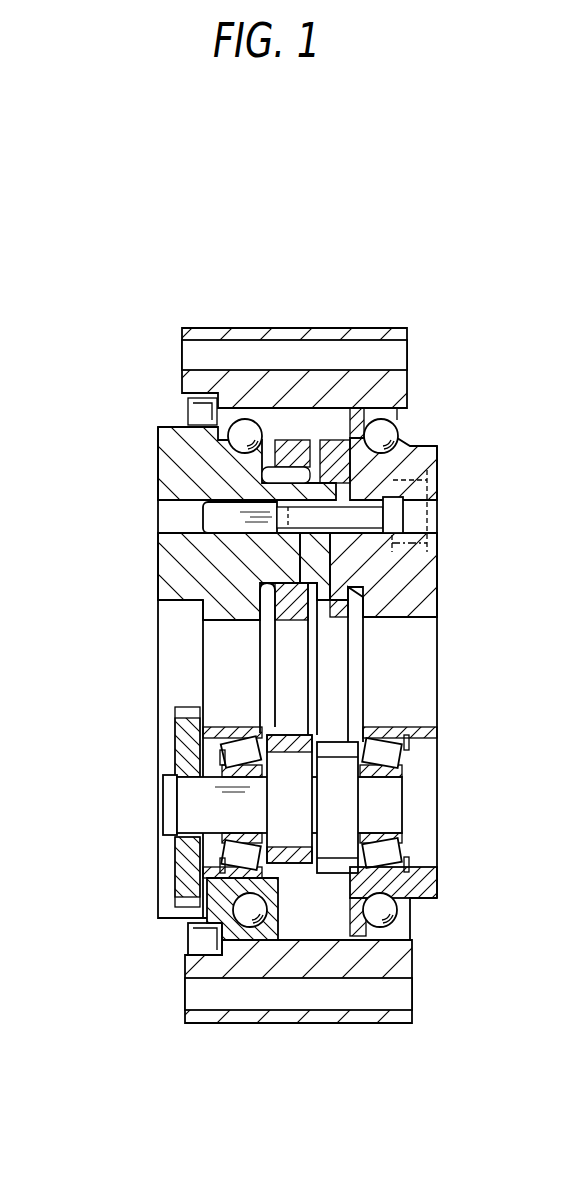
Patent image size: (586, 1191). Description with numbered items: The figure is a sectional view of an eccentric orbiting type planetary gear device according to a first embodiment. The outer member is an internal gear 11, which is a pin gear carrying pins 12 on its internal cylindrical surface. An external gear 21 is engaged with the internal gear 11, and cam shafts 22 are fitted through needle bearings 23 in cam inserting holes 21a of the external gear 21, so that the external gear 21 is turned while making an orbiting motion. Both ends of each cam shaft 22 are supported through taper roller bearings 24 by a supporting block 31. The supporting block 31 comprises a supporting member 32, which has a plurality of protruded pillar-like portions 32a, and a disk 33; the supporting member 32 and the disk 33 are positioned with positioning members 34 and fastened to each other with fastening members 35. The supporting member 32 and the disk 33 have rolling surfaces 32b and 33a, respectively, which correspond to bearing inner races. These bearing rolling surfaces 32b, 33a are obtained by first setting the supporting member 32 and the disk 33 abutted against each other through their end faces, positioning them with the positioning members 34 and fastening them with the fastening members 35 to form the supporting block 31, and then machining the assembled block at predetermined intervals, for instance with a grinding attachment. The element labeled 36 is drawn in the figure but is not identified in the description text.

The internal gear 11 is at (190, 972).
The pins 12 is at (410, 963).
The external gear 21 is at (297, 445).
The cam inserting holes 21a is at (200, 797).
The cam shafts 22 is at (383, 795).
The needle bearings 23 is at (287, 732).
The taper roller bearings 24 is at (402, 764).
The supporting block 31 is at (150, 481).
The supporting member 32 is at (176, 568).
The pillar-like portions 32a is at (330, 555).
The rolling surface 32b is at (258, 428).
The disk 33 is at (398, 600).
The rolling surface 33a is at (372, 418).
The positioning members 34 is at (385, 513).
The fastening members 35 is at (440, 497).
The ball bearing 36 is at (397, 922).